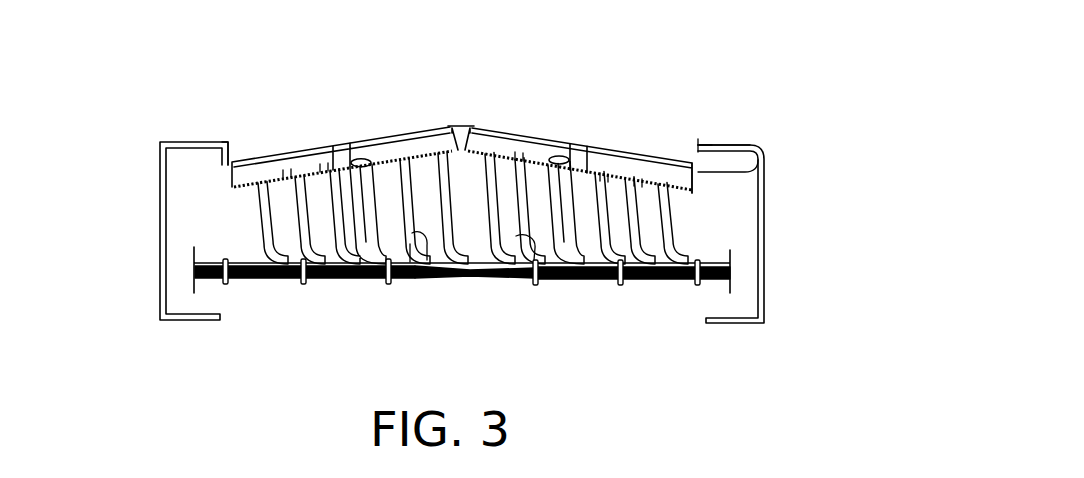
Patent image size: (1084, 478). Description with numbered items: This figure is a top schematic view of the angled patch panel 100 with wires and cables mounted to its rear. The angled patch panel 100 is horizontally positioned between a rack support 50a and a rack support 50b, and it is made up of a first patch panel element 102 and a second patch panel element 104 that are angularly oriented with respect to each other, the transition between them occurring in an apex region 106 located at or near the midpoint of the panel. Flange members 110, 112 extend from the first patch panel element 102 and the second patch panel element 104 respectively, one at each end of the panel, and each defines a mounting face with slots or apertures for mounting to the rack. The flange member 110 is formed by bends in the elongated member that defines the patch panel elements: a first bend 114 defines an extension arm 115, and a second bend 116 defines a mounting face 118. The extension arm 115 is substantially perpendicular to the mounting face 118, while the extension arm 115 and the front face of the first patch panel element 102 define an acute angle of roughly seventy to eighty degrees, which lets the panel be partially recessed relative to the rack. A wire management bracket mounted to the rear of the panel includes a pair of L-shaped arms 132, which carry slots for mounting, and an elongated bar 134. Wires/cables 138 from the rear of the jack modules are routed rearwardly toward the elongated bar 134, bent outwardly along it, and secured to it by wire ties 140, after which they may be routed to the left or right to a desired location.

The rack support 50a is at (765, 205).
The rack support 50b is at (158, 223).
The angled patch panel 100 is at (477, 111).
The first patch panel element 102 is at (620, 155).
The second patch panel element 104 is at (316, 150).
The apex region 106 is at (461, 127).
The flange member 110 is at (704, 138).
The flange member 112 is at (222, 140).
The first bend 114 is at (700, 176).
The extension arm 115 is at (718, 165).
The second bend 116 is at (698, 146).
The mounting face 118 is at (708, 135).
The L-shaped arm 132 is at (353, 200).
The elongated bar 134 is at (460, 272).
The wires/cables 138 is at (420, 282).
The wire tie 140 is at (306, 285).